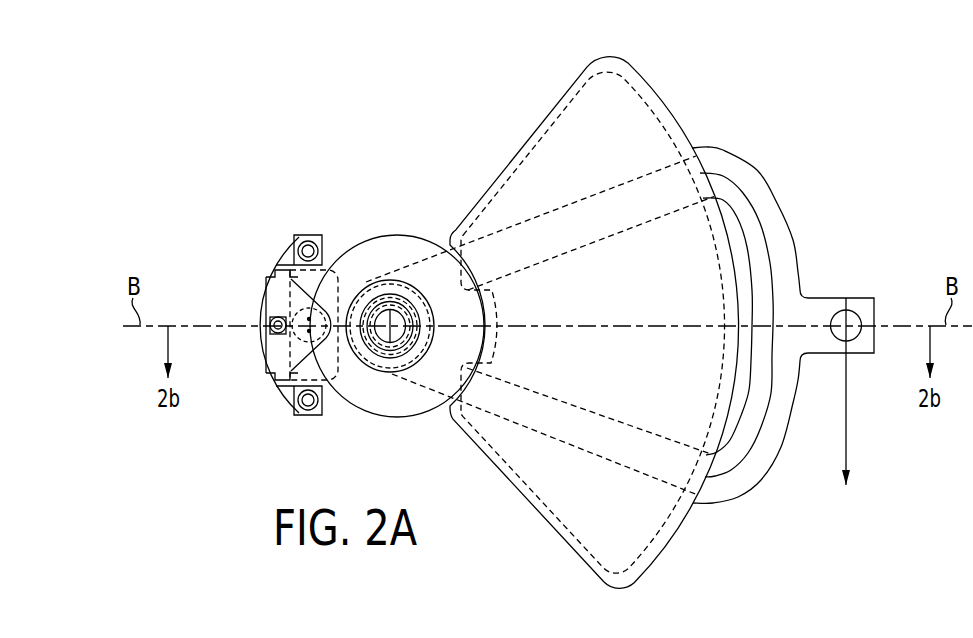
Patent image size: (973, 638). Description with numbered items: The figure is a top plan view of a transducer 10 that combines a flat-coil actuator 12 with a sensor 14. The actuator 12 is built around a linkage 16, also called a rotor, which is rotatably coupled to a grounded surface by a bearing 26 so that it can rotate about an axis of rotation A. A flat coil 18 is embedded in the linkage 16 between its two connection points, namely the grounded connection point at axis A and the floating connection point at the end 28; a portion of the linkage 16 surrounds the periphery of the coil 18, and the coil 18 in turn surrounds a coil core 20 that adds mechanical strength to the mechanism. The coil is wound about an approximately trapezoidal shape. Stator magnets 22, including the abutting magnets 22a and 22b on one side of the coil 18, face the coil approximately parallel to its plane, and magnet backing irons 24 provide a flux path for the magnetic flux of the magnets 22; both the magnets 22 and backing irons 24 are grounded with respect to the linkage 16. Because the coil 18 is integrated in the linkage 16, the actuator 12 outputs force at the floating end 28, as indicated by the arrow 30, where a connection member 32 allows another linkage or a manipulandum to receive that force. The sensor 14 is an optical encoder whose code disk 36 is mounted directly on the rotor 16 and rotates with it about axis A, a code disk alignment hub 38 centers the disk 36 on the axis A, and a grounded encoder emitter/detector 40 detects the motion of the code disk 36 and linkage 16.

The transducer 10 is at (823, 83).
The flat-coil actuator 12 is at (708, 123).
The sensor 14 is at (413, 442).
The linkage 16 is at (362, 295).
The flat coil 18 is at (752, 235).
The coil core 20 is at (740, 263).
The stator magnets 22 is at (550, 128).
The magnet 22a is at (615, 164).
The magnet 22b is at (615, 517).
The magnet backing irons 24 is at (500, 178).
The bearing 26 is at (433, 300).
The end 28 is at (818, 283).
The arrow 30 is at (848, 461).
The connection member 32 is at (876, 309).
The code disk 36 is at (417, 284).
The code disk alignment hub 38 is at (397, 368).
The encoder emitter/detector 40 is at (279, 392).
The axis of rotation A is at (386, 329).